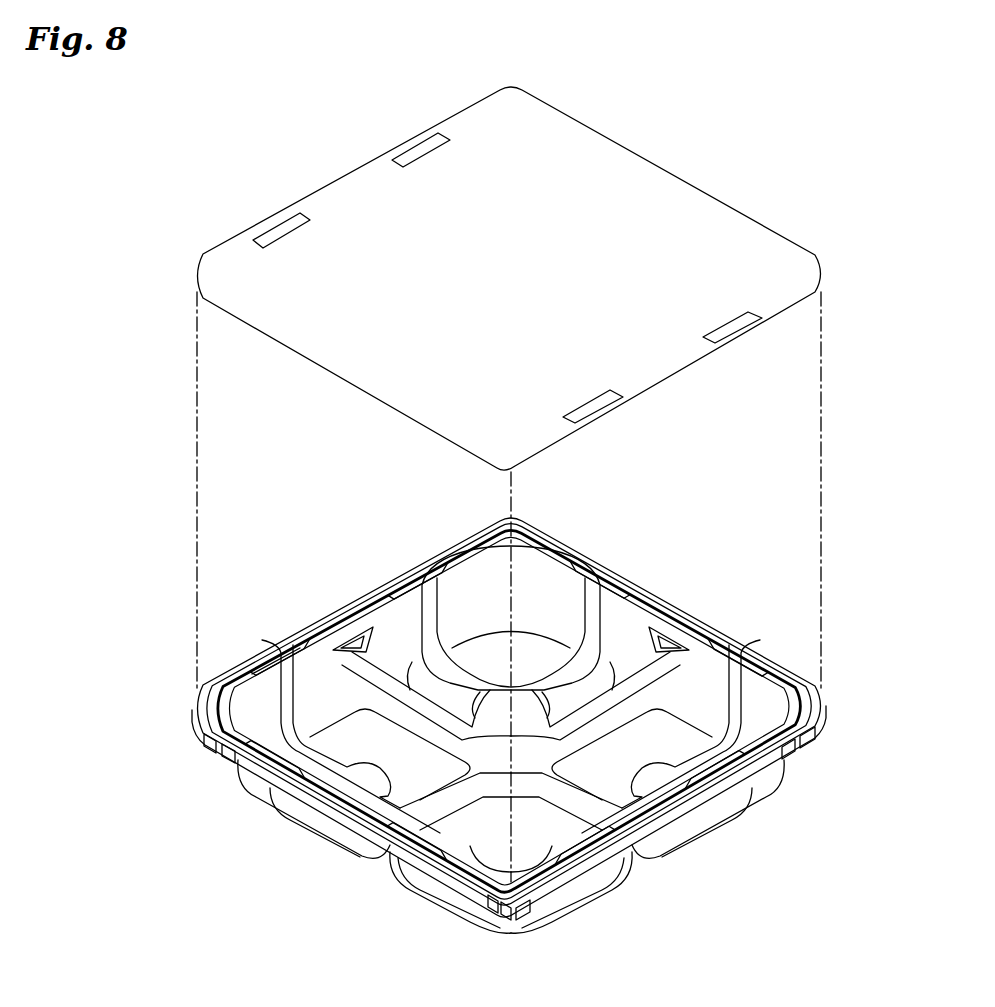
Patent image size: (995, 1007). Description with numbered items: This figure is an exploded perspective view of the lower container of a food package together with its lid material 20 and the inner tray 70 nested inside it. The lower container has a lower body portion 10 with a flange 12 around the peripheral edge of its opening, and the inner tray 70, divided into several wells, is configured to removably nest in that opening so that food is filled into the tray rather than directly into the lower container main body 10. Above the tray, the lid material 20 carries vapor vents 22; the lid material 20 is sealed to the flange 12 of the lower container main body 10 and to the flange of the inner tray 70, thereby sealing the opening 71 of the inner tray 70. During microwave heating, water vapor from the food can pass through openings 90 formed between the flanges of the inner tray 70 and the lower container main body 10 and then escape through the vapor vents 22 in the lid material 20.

The lower body portion 10 is at (300, 630).
The flange 12 is at (240, 665).
The lid material 20 is at (652, 158).
The vapor vent 22 is at (413, 147).
The inner tray 70 is at (357, 617).
The opening of inner tray 71 is at (535, 583).
The openings 90 is at (420, 567).